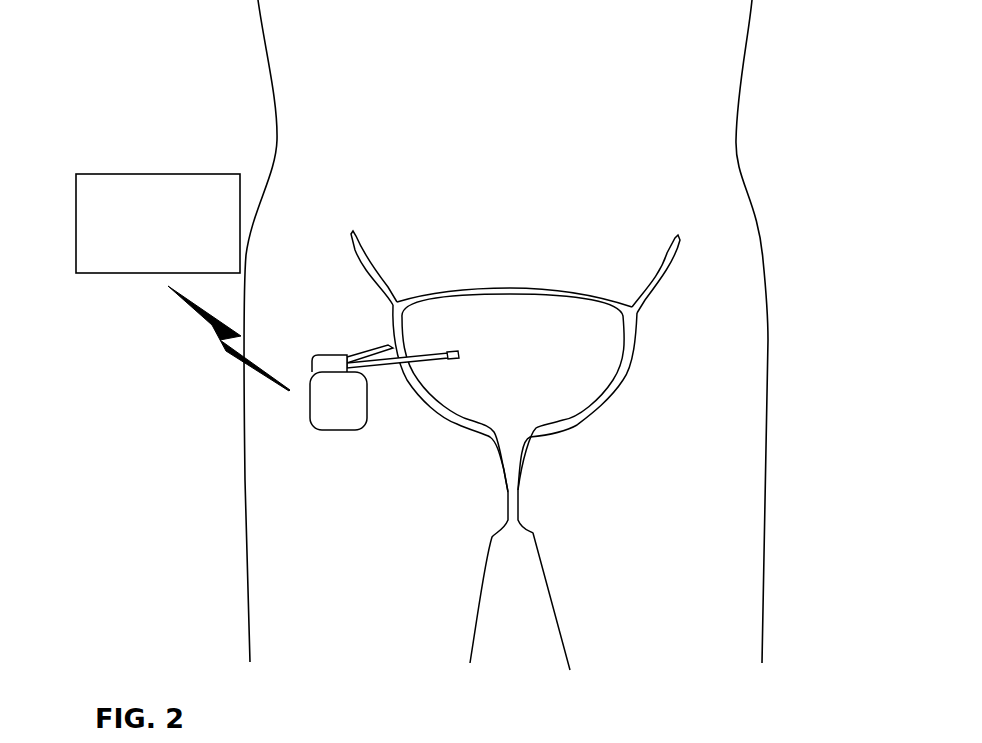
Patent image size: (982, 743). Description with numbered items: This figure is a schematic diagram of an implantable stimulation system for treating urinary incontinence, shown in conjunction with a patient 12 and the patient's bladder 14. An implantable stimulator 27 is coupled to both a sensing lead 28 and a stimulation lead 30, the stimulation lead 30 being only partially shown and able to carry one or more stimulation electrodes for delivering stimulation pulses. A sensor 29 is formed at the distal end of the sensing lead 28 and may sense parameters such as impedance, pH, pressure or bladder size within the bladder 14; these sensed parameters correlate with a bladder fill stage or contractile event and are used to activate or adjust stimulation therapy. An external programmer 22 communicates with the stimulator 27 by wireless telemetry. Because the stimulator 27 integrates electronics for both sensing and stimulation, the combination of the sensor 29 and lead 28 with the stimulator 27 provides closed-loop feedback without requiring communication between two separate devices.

The patient 12 is at (713, 145).
The bladder 14 is at (533, 288).
The external programmer 22 is at (110, 173).
The implantable stimulator 27 is at (338, 431).
The sensing lead 28 is at (383, 369).
The sensor 29 is at (455, 350).
The stimulation lead 30 is at (357, 350).